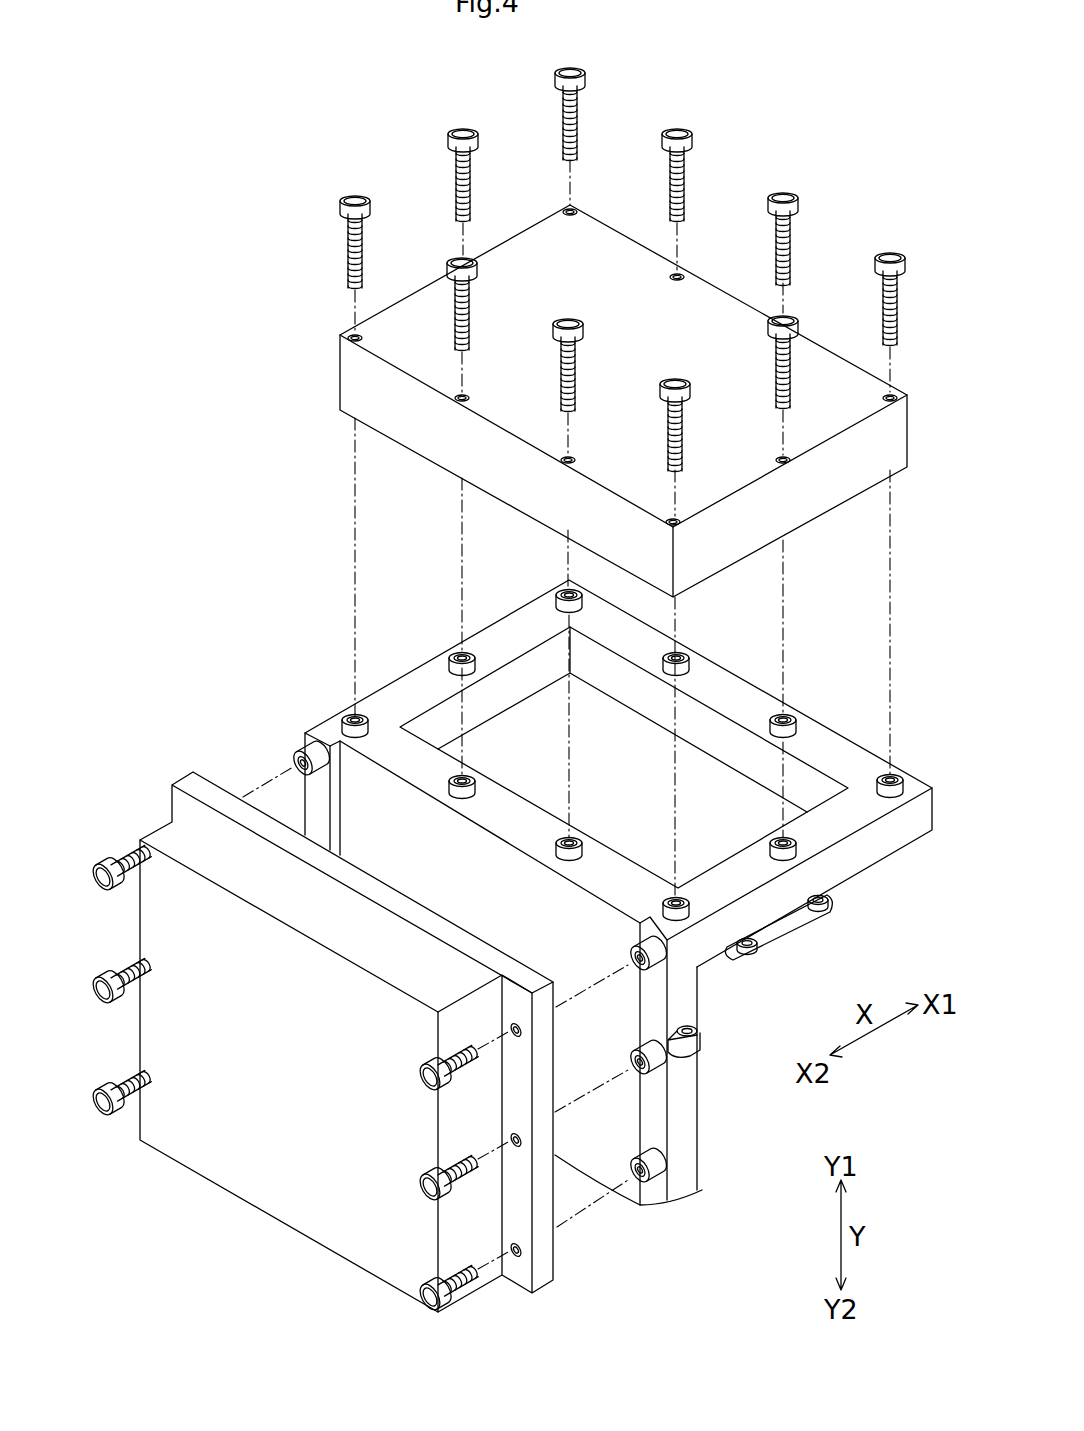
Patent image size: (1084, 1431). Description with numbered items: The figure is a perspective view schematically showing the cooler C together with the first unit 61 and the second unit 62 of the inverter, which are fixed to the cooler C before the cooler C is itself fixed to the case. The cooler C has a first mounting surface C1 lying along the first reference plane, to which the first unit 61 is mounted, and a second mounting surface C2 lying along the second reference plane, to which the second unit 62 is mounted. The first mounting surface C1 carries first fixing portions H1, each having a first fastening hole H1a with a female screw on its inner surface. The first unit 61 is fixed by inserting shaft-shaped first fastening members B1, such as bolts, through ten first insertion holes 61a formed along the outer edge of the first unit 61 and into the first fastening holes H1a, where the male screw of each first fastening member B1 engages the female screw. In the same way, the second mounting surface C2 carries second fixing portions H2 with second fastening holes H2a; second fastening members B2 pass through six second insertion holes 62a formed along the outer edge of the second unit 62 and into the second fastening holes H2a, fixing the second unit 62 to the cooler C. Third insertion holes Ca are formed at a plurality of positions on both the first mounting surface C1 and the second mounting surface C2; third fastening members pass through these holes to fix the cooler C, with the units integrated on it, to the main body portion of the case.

The first fastening member B1 is at (355, 200).
The first unit 61 is at (576, 365).
The first insertion hole 61a is at (678, 272).
The cooler C is at (576, 927).
The first mounting surface C1 is at (832, 743).
The second mounting surface C2 is at (610, 1137).
The third insertion hole Ca is at (825, 895).
The first fixing portion H1 is at (696, 645).
The first fastening hole H1a is at (672, 668).
The second fixing portion H2 is at (291, 745).
The second fastening hole H2a is at (300, 765).
The second unit 62 is at (318, 967).
The second insertion hole 62a is at (512, 1028).
The second fastening member B2 is at (108, 1000).